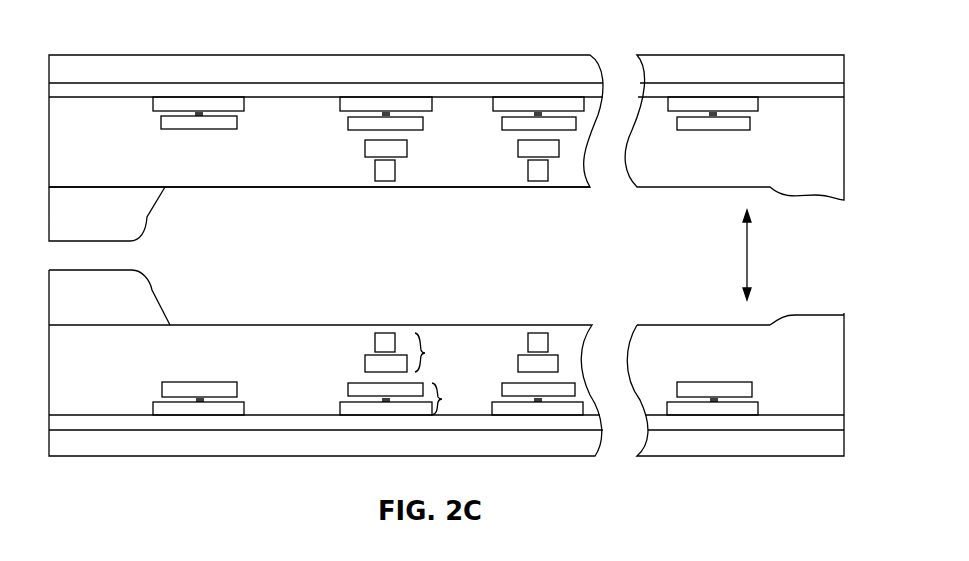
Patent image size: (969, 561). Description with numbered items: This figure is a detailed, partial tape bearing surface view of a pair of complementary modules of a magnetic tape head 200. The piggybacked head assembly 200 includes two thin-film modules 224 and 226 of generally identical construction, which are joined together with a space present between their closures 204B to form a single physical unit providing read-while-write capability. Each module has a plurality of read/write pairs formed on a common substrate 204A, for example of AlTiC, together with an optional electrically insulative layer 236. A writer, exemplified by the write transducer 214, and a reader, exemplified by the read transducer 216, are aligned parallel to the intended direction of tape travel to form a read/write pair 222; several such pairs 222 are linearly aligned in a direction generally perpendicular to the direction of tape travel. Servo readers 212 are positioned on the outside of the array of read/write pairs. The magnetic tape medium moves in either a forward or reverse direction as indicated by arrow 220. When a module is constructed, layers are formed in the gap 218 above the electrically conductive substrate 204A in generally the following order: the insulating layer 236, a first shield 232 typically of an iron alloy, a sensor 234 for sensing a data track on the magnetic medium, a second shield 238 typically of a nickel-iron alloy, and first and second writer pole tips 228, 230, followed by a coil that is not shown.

The magnetic tape head 200 is at (378, 45).
The substrate 204A is at (180, 80).
The closure 204B is at (151, 220).
The servo reader 212 is at (240, 374).
The write transducer 214 is at (378, 329).
The read transducer 216 is at (368, 382).
The gap 218 is at (243, 187).
The arrow 220 is at (748, 262).
The read/write pair 222 is at (368, 335).
The thin-film module 224 is at (765, 55).
The thin-film module 226 is at (753, 456).
The first writer pole tip 228 is at (365, 365).
The second writer pole tip 230 is at (375, 338).
The first shield 232 is at (340, 405).
The sensor 234 is at (337, 393).
The electrically insulative layer 236 is at (833, 407).
The second shield 238 is at (348, 383).